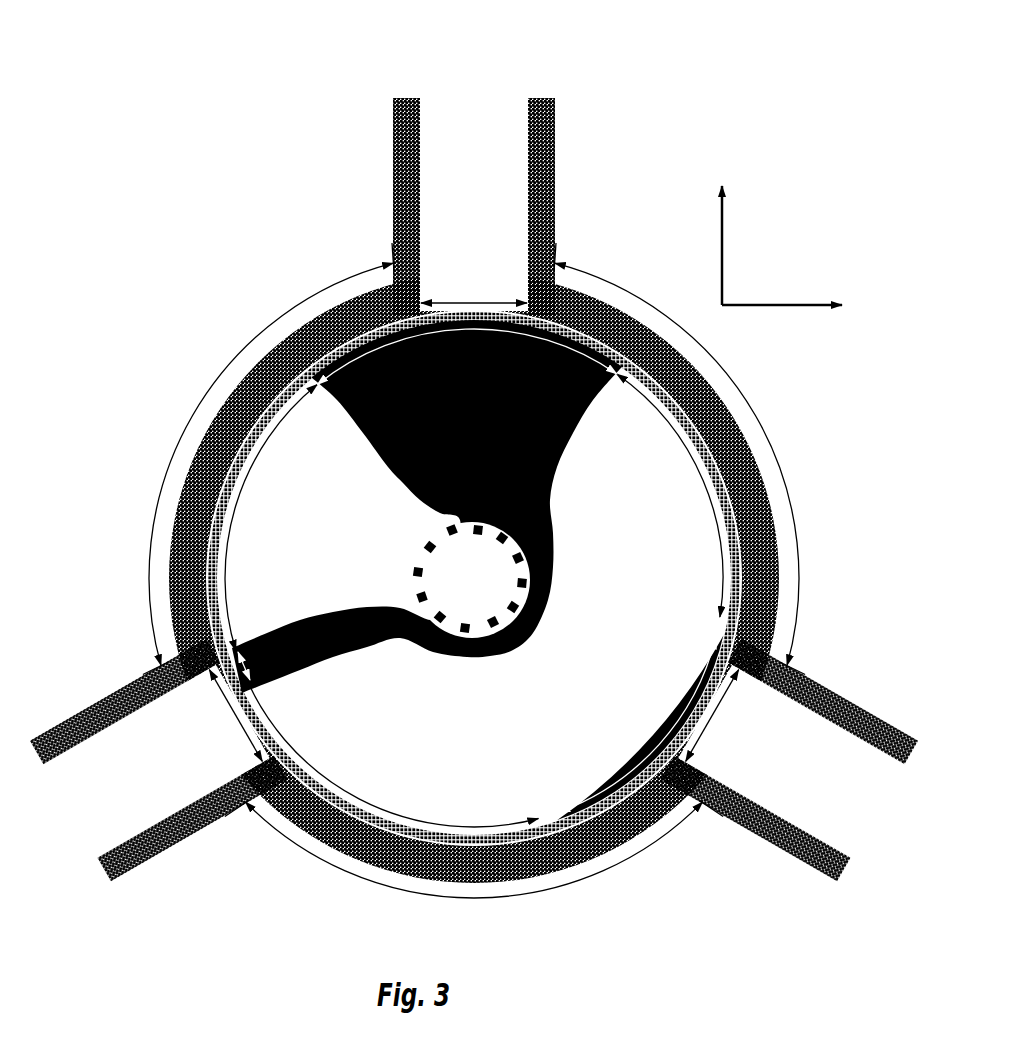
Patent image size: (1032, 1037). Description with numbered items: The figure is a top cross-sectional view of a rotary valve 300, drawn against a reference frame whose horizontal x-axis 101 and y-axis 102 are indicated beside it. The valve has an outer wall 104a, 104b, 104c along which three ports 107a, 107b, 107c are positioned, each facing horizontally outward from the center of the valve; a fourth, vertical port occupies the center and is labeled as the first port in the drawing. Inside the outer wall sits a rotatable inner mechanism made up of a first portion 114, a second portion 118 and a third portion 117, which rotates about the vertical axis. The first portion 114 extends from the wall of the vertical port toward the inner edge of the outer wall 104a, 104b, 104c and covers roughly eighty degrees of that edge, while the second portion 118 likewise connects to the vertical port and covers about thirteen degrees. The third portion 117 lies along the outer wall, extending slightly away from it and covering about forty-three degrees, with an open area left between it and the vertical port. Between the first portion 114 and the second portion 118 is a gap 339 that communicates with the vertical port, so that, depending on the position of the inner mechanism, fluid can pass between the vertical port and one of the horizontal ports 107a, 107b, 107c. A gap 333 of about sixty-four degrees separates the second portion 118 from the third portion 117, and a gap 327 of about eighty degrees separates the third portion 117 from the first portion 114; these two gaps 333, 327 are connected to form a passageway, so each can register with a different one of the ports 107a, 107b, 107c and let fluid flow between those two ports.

The valve 300 is at (473, 490).
The x-axis 101 is at (782, 332).
The y-axis 102 is at (698, 245).
The outer wall 104a is at (219, 464).
The outer wall 104b is at (473, 881).
The outer wall 104c is at (711, 464).
The port 107a is at (221, 716).
The port 107b is at (744, 716).
The port 107c is at (474, 276).
The first portion 114 is at (436, 506).
The third portion 117 is at (640, 728).
The second portion 118 is at (292, 686).
The gap 327 is at (528, 578).
The gap 333 is at (474, 610).
The gap 339 is at (474, 600).